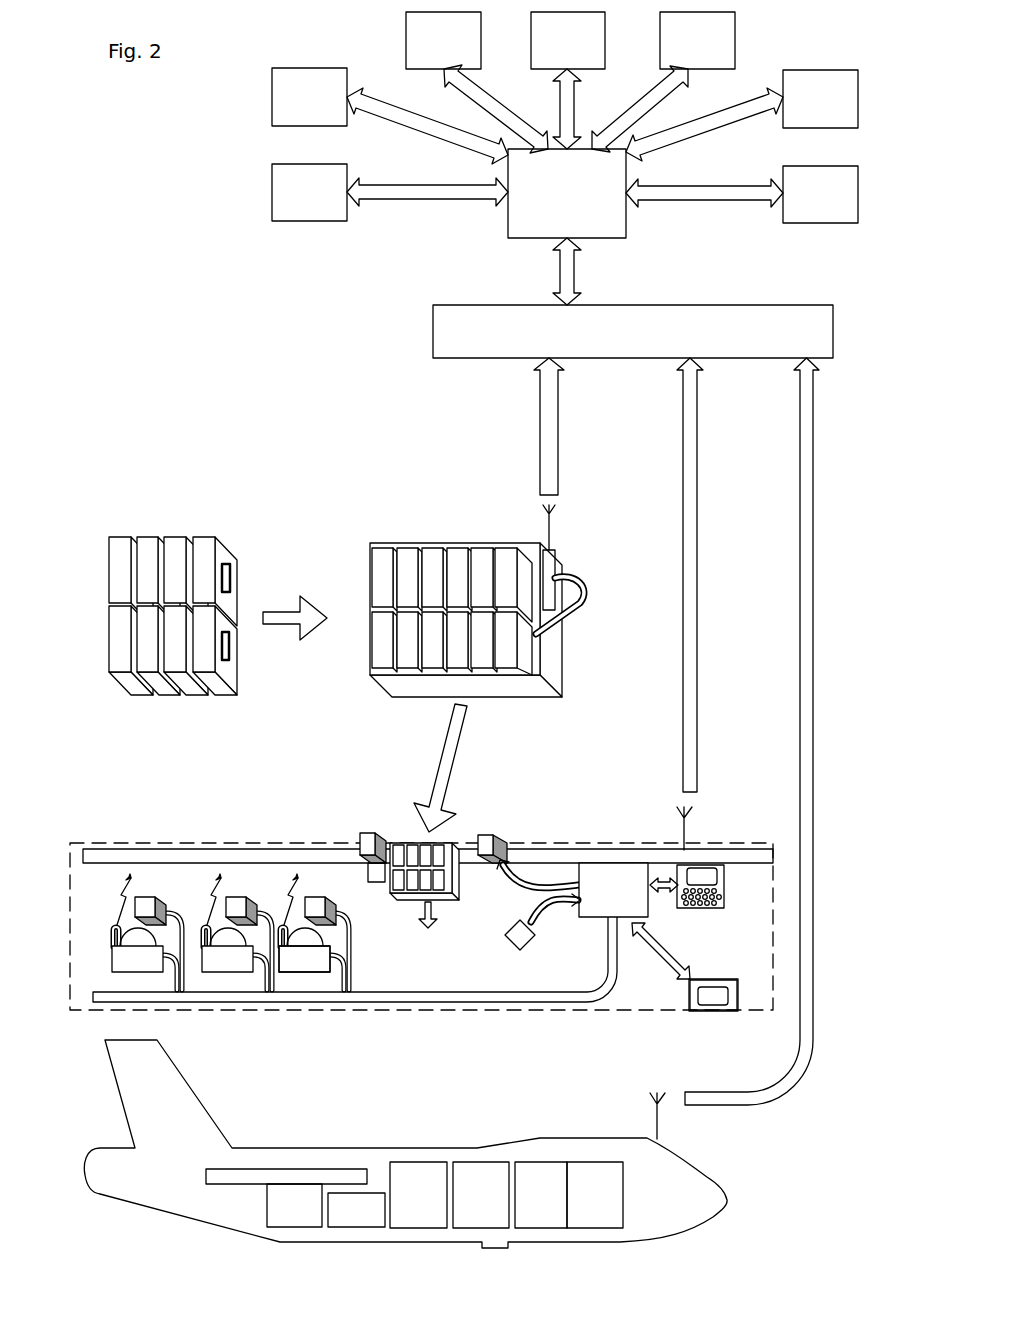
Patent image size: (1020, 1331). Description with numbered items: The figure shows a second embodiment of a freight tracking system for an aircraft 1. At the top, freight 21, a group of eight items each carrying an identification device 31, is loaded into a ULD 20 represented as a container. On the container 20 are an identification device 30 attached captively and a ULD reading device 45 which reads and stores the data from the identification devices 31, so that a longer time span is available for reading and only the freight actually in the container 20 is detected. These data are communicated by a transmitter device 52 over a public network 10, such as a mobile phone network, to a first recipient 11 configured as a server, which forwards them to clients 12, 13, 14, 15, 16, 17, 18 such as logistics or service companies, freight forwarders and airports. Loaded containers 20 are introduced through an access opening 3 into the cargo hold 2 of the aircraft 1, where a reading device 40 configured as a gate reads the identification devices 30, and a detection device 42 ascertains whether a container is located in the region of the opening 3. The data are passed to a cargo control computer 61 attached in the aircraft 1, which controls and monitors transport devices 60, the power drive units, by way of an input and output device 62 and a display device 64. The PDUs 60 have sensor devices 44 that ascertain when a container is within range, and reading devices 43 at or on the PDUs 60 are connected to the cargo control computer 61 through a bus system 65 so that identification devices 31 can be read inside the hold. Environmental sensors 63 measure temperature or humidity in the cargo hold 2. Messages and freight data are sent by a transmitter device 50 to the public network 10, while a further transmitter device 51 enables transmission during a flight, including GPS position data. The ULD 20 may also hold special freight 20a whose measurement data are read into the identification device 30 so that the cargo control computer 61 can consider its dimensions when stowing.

The aircraft 1 is at (568, 1138).
The cargo hold 2 is at (743, 990).
The access opening 3 is at (361, 836).
The public network 10 is at (440, 318).
The first recipient/server 11 is at (567, 227).
The client 12 is at (390, 192).
The client 13 is at (390, 116).
The client 14 is at (477, 82).
The client 15 is at (568, 80).
The client 16 is at (663, 82).
The client 17 is at (742, 115).
The client 18 is at (742, 194).
The ULD/container 20 is at (550, 647).
The special freight 20a is at (280, 1173).
The freight 21 is at (123, 546).
The identification device/RFID tag 30 is at (455, 850).
The further identification device/RFID tag 31 is at (225, 565).
The first reading device 40 is at (500, 837).
The detection device 42 is at (370, 874).
The reading device 43 is at (147, 897).
The sensor device 44 is at (112, 958).
The ULD reading device 45 is at (562, 580).
The first transmitter device 50 is at (700, 806).
The second transmitter device 51 is at (653, 1117).
The third transmitter device 52 is at (558, 517).
The transport device (PDU) 60 is at (290, 962).
The cargo control computer (CCC) 61 is at (607, 880).
The input/output device (control panel) 62 is at (700, 867).
The environmental sensors 63 is at (520, 948).
The display device 64 is at (692, 1011).
The bus system 65 is at (390, 1002).